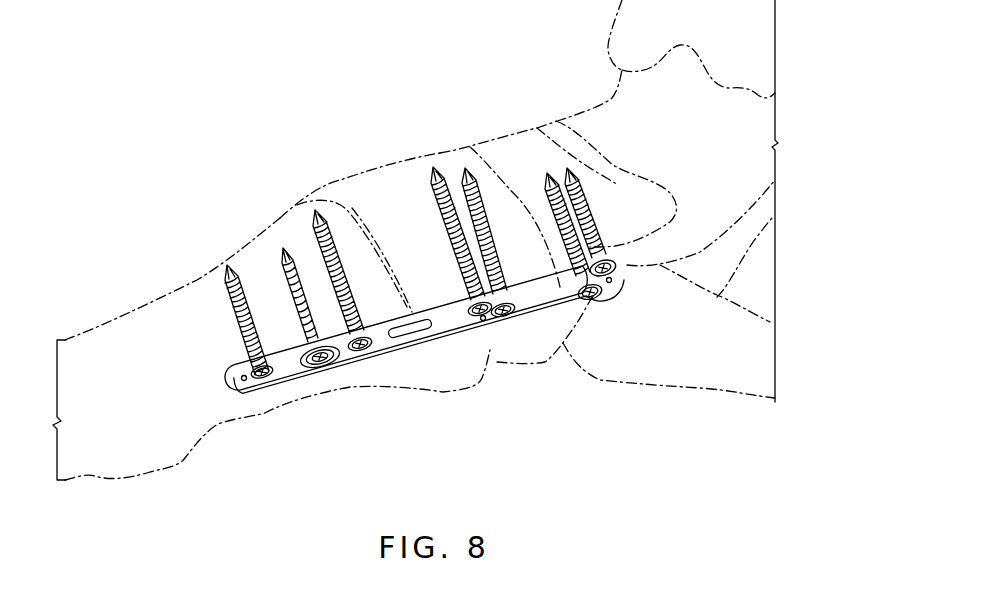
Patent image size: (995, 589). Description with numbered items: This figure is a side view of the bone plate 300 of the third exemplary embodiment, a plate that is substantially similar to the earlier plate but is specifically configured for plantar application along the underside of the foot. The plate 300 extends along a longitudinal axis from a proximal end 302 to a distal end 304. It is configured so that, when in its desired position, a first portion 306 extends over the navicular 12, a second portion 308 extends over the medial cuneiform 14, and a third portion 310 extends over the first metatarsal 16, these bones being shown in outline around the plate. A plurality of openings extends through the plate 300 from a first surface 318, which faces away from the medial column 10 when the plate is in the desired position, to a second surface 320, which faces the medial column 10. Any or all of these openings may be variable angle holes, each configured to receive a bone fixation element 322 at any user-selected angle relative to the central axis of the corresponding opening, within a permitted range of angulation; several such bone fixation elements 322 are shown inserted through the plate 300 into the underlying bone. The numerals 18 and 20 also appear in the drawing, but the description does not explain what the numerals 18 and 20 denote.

The medial column 10 is at (276, 190).
The navicular 12 is at (513, 140).
The medial cuneiform 14 is at (405, 173).
The first metatarsal 16 is at (195, 278).
The fracture 18 is at (487, 157).
The fracture line 20 is at (357, 213).
The bone plate 300 is at (336, 108).
The proximal end 302 is at (623, 279).
The distal end 304 is at (235, 380).
The first portion 306 is at (603, 284).
The second portion 308 is at (498, 332).
The third portion 310 is at (303, 364).
The first surface 318 is at (445, 340).
The second surface 320 is at (410, 227).
The bone fixation element 322 is at (463, 177).